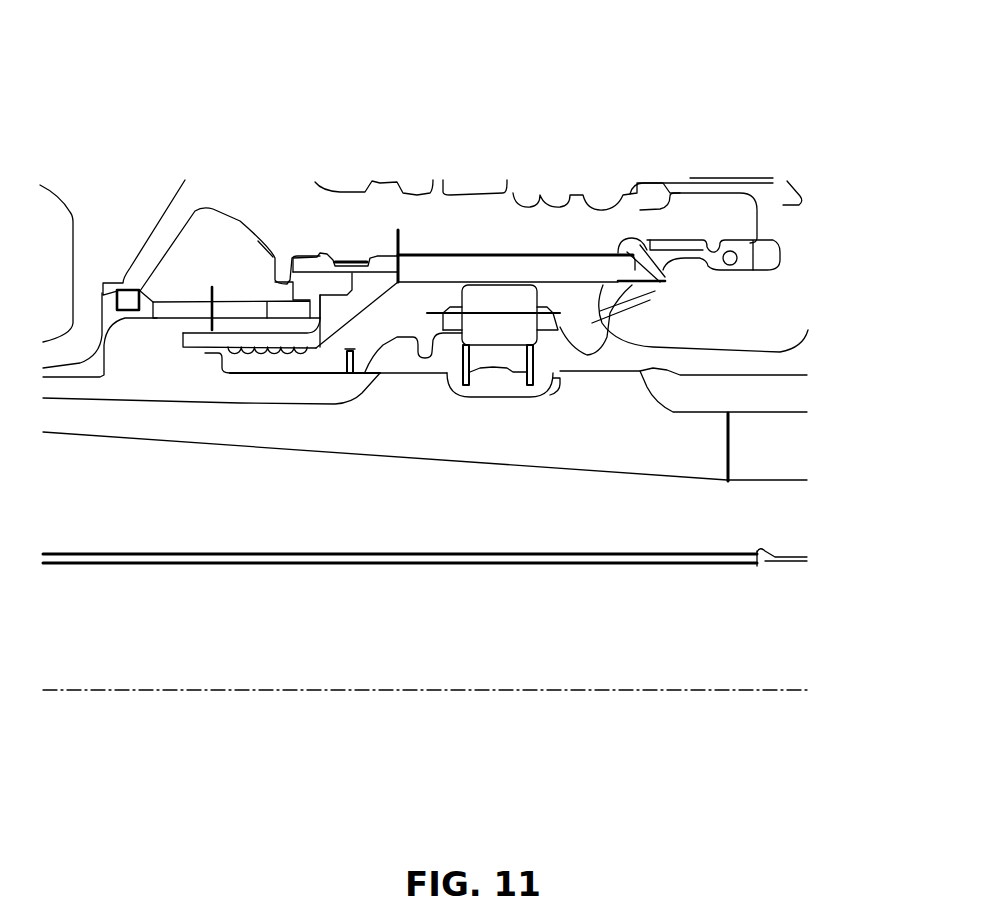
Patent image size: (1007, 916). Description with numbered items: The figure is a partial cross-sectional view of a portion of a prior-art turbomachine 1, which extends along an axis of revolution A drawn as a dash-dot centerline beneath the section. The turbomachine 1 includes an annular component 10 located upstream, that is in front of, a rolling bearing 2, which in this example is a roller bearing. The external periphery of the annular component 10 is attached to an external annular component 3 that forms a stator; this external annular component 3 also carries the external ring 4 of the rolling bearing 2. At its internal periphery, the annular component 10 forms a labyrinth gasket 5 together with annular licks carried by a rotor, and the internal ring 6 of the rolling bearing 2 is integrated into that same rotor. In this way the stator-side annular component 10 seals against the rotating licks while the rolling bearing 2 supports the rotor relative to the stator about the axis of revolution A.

The turbomachine 1 is at (392, 60).
The rolling bearing 2 is at (706, 301).
The external annular component 3 is at (356, 220).
The external ring 4 is at (517, 270).
The labyrinth gasket 5 is at (205, 353).
The internal ring 6 is at (458, 353).
The annular component 10 is at (382, 240).
The axis of revolution A is at (795, 691).